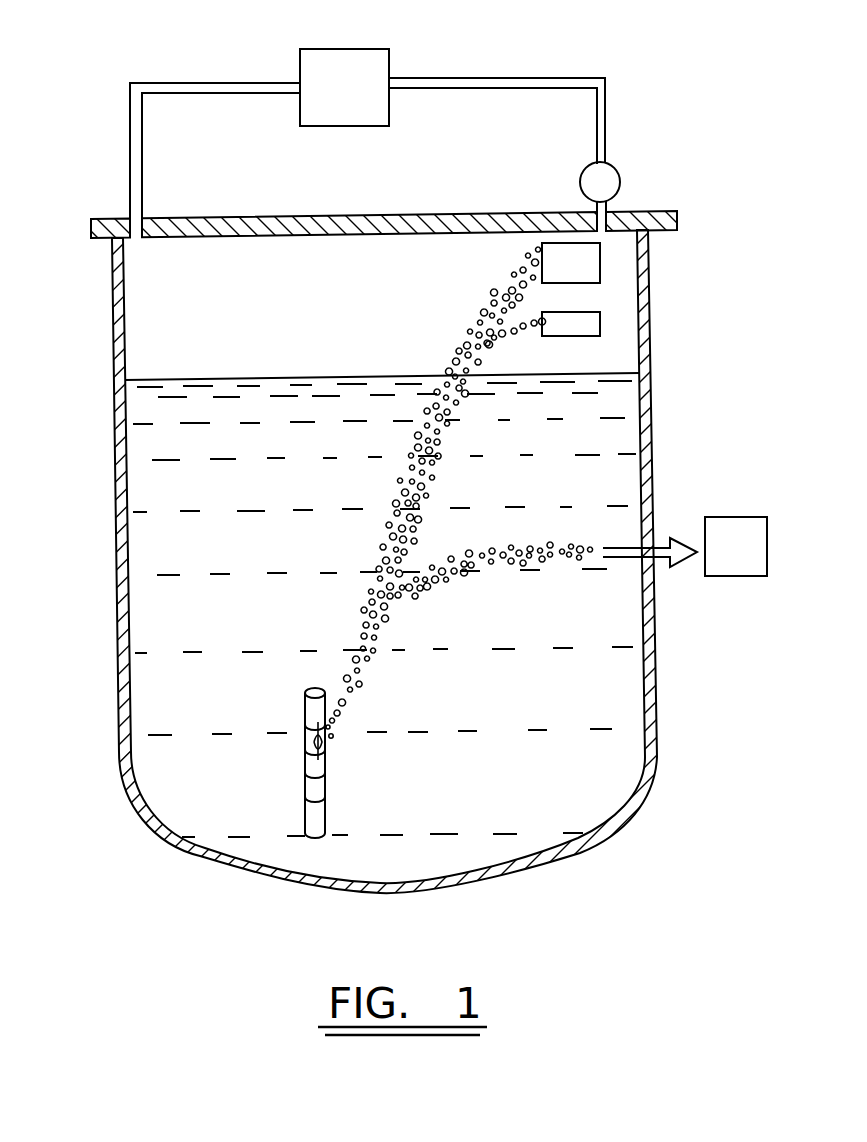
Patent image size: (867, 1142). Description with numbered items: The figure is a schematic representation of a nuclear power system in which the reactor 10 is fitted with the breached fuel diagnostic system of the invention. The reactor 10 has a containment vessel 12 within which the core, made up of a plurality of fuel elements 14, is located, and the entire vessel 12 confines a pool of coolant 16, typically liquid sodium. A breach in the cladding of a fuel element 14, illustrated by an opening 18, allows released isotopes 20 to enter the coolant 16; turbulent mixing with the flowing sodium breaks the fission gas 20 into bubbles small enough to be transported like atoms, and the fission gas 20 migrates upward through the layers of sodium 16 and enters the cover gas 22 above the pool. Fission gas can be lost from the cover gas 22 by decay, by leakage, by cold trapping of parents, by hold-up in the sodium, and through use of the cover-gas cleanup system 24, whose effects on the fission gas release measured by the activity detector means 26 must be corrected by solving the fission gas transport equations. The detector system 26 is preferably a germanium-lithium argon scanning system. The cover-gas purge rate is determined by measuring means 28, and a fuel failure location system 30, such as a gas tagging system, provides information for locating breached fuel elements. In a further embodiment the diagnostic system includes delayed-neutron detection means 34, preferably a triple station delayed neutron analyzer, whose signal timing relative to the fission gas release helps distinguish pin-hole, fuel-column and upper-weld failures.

The reactor 10 is at (420, 205).
The containment vessel 12 is at (116, 521).
The fuel element 14 is at (308, 785).
The coolant 16 is at (197, 618).
The opening 18 is at (323, 744).
The released isotopes 20 is at (397, 615).
The cover gas 22 is at (185, 307).
The cover-gas cleanup system 24 is at (362, 41).
The activity detector means 26 is at (600, 264).
The measuring means 28 is at (620, 173).
The fuel failure location system 30 is at (600, 318).
The delayed-neutron detection means 34 is at (727, 588).